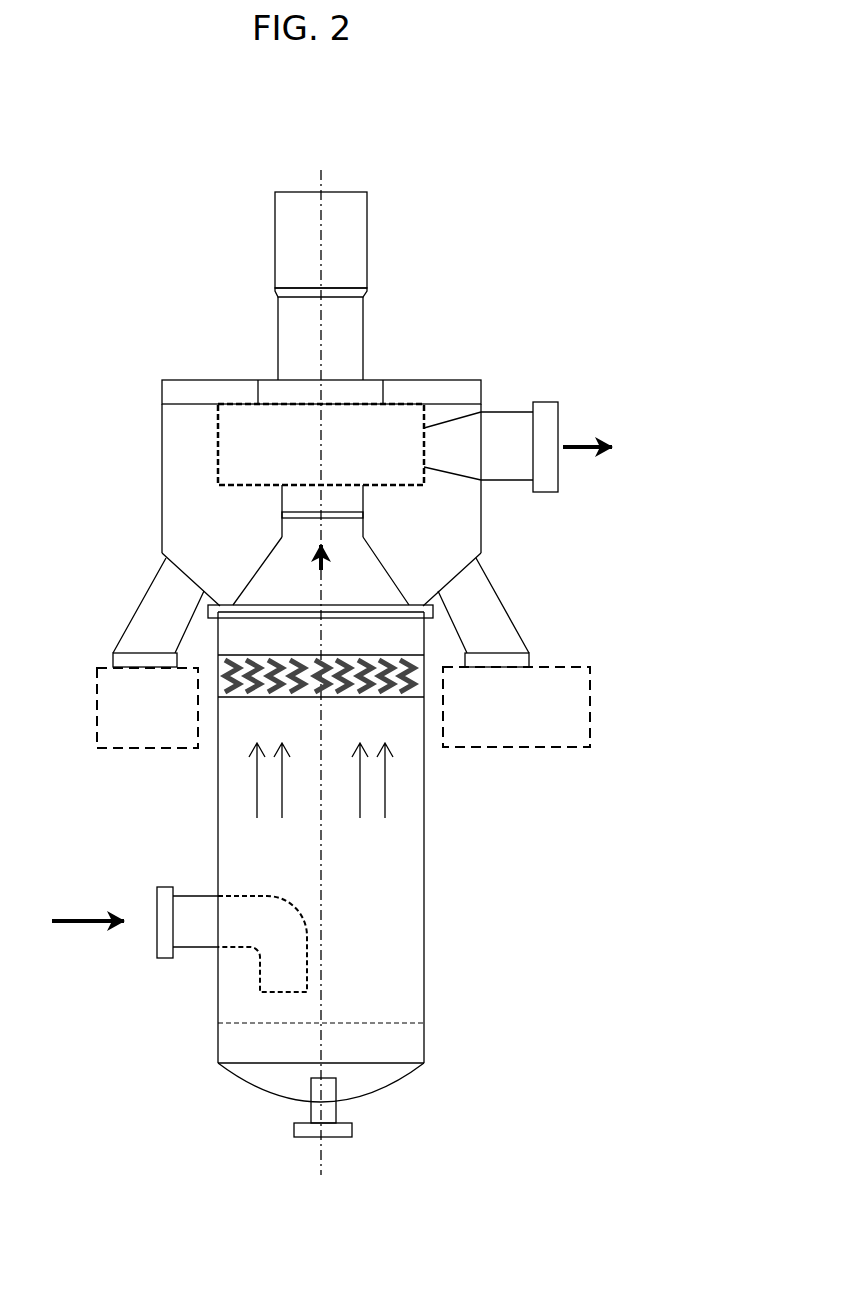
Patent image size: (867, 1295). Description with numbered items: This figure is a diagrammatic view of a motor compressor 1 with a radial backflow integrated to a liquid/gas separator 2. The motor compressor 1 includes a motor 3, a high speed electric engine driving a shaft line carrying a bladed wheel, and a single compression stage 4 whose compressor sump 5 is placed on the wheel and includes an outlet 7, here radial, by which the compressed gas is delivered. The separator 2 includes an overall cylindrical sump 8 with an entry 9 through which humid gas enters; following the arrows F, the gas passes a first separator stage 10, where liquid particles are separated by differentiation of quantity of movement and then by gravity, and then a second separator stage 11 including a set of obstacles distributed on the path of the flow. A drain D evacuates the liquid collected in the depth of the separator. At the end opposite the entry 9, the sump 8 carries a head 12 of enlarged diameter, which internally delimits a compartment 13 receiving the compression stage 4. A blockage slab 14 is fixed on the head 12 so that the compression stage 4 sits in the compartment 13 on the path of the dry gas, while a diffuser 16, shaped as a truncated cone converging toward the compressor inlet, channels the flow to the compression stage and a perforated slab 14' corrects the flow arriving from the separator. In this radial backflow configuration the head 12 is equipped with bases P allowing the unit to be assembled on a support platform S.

The motor compressor 1 is at (412, 233).
The liquid/gas separator 2 is at (440, 882).
The motor 3 is at (266, 270).
The compression stage 4 is at (260, 450).
The compressor sump 5 is at (217, 427).
The outlet 7 is at (548, 392).
The sump 8 is at (424, 852).
The entry 9 is at (157, 940).
The first separator stage 10 is at (237, 977).
The second separator stage 11 is at (392, 671).
The head 12 is at (162, 508).
The compartment 13 is at (460, 533).
The blockage slab 14 is at (321, 357).
The perforated slab 14' is at (205, 523).
The diffuser 16 is at (472, 565).
The arrows F is at (585, 443).
The bases P is at (150, 622).
The support platform S is at (590, 703).
The drain D is at (302, 1128).